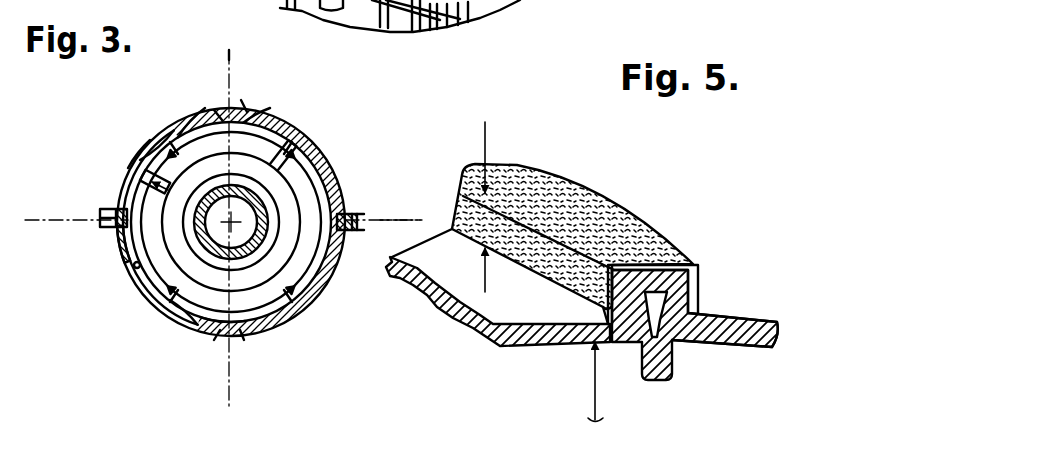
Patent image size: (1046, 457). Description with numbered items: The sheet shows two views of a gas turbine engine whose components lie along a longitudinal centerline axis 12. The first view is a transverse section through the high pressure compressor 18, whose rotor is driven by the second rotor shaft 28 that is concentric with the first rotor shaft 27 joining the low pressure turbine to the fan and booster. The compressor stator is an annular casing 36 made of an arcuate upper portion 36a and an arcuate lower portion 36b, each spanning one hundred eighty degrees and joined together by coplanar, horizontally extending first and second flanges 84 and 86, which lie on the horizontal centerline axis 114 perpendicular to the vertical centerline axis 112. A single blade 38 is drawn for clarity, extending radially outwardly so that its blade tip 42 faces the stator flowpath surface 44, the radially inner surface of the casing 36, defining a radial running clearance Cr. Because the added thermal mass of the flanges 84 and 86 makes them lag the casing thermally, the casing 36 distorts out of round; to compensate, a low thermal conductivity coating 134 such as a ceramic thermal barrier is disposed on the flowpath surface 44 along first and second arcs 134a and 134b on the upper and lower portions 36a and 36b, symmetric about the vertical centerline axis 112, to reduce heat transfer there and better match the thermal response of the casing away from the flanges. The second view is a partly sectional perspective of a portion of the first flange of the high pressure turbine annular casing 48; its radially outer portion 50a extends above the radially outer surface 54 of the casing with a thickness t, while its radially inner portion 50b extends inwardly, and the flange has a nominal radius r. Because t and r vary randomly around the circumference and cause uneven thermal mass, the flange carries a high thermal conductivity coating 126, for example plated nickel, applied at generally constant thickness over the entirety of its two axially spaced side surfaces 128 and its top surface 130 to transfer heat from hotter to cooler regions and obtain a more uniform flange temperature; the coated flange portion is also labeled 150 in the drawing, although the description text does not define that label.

In FIG. 3, the longitudinal centerline axis 12 is at (287, 246).
In FIG. 3, the high pressure compressor 18 is at (280, 110).
In FIG. 3, the first rotor shaft 27 is at (245, 226).
In FIG. 3, the second rotor shaft 28 is at (317, 152).
In FIG. 3, the annular casing 36 is at (140, 300).
In FIG. 3, the arcuate upper portion 36a is at (144, 127).
In FIG. 3, the arcuate lower portion 36b is at (284, 326).
In FIG. 3, the blades 38 is at (127, 258).
In FIG. 3, the blade tip 42 is at (128, 188).
In FIG. 3, the stator flowpath surface 44 is at (133, 270).
In FIG. 5, the HPT annular casing 48 is at (760, 345).
In FIG. 5, the radially outer portion 50a is at (700, 270).
In FIG. 5, the radially inner portion 50b is at (672, 370).
In FIG. 5, the radially outer surface 54 is at (496, 344).
In FIG. 3, the first flange 84 is at (100, 226).
In FIG. 3, the second flange 86 is at (352, 212).
In FIG. 3, the vertical centerline axis 112 is at (222, 56).
In FIG. 5, the horizontal centerline axis 114 is at (398, 218).
In FIG. 5, the coating 126 is at (480, 218).
In FIG. 5, the side surfaces 128 is at (608, 288).
In FIG. 5, the top surface 130 is at (667, 266).
In FIG. 3, the coating 134 is at (248, 98).
In FIG. 3, the first arc 134a is at (194, 108).
In FIG. 3, the second arc 134b is at (197, 328).
In FIG. 5, the abrasive stone 150 is at (603, 198).
In FIG. 3, the radial running clearance Cr is at (133, 168).
In FIG. 5, the thickness t is at (488, 137).
In FIG. 5, the nominal radius r is at (592, 388).